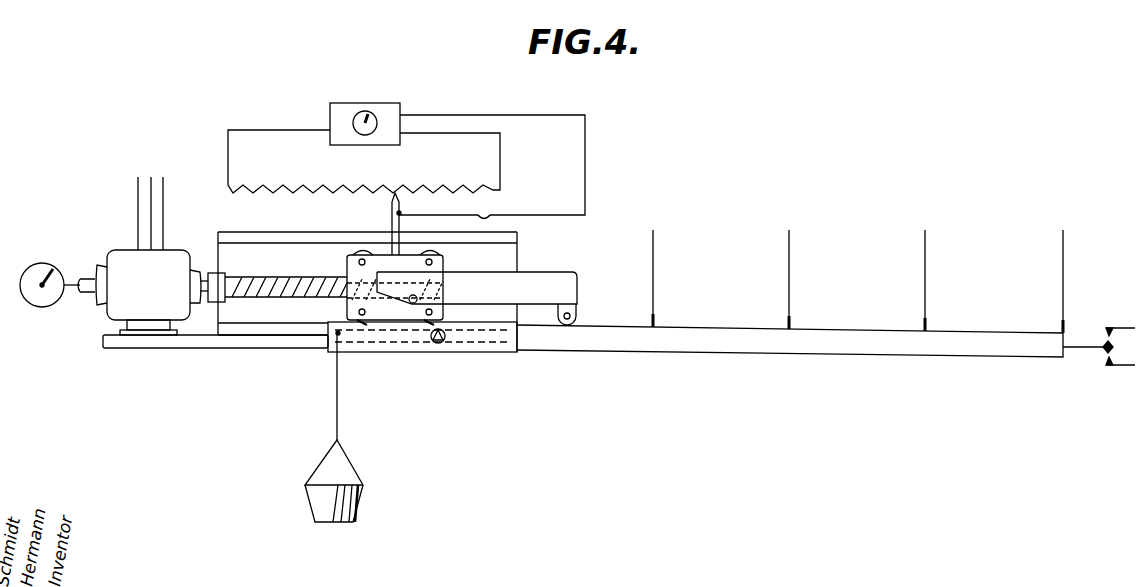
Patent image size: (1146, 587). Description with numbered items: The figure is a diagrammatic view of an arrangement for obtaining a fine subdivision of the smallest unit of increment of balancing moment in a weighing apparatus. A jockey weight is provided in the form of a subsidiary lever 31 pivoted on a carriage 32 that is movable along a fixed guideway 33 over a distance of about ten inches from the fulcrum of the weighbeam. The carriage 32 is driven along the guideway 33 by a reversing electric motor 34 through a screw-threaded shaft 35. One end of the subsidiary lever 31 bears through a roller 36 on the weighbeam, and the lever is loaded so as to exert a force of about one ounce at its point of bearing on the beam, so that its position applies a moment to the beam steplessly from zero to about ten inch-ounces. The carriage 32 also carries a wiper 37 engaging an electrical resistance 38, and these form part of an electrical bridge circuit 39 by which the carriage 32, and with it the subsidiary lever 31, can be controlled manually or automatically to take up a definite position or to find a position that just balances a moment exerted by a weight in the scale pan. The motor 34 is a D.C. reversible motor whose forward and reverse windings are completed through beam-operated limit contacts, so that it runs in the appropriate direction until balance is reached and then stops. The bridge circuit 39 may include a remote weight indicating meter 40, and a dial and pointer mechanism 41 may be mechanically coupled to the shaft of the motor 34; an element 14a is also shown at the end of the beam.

The dial and pointer mechanism 41 is at (43, 263).
The reversing electric motor 34 is at (203, 262).
The screw-threaded shaft 35 is at (278, 305).
The fixed guideway 33 is at (517, 262).
The carriage 32 is at (355, 270).
The wiper 37 is at (390, 212).
The electrical resistance 38 is at (293, 185).
The electrical bridge circuit 39 is at (330, 106).
The remote weight indicating meter 40 is at (365, 111).
The subsidiary lever 31 is at (560, 272).
The roller 36 is at (576, 314).
The end stop 14a is at (1105, 337).